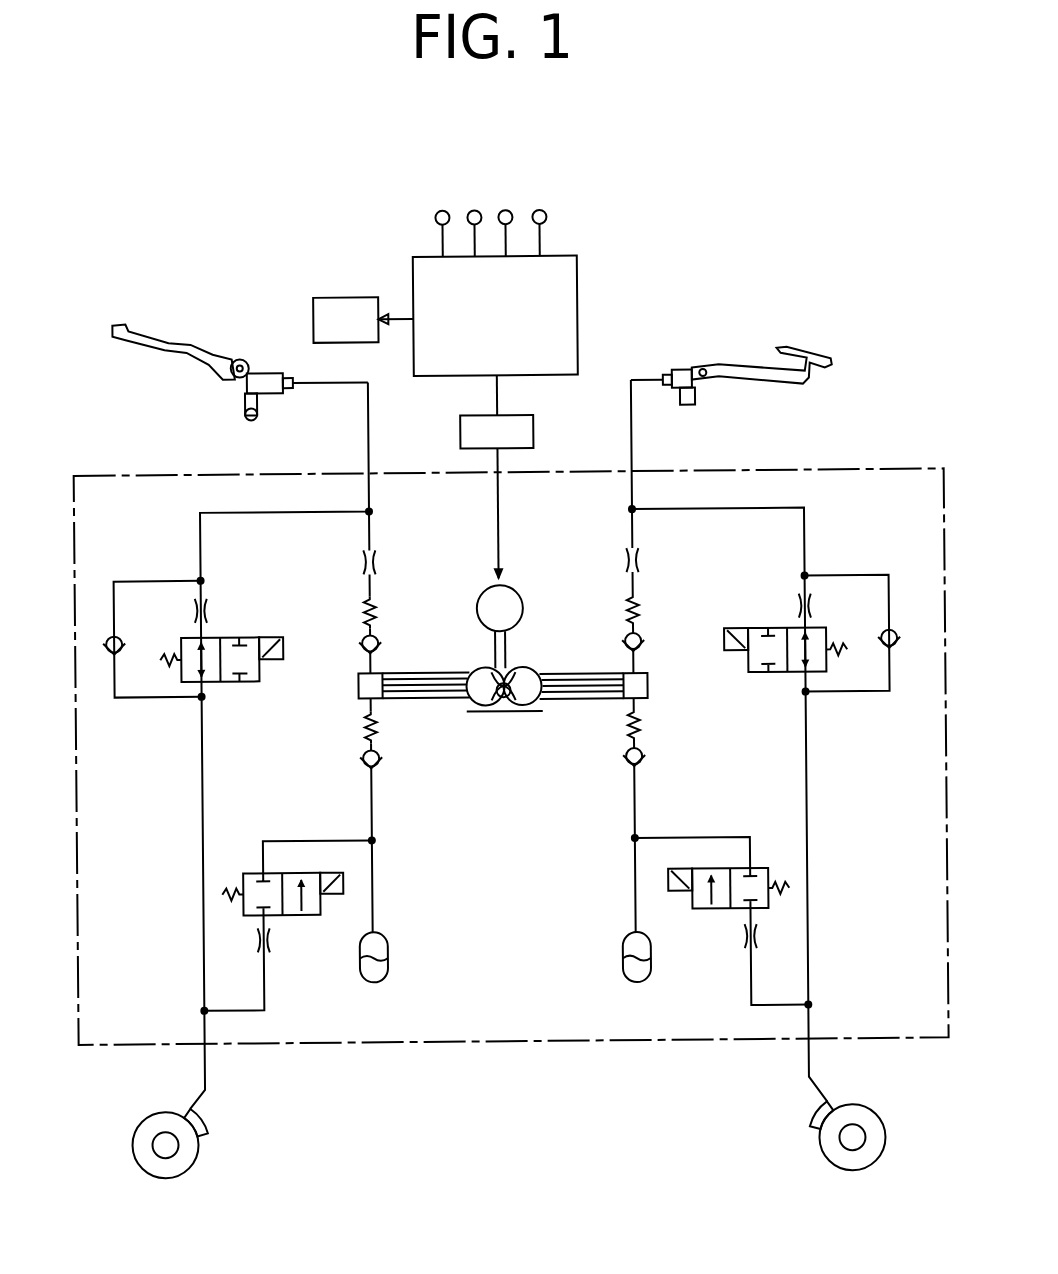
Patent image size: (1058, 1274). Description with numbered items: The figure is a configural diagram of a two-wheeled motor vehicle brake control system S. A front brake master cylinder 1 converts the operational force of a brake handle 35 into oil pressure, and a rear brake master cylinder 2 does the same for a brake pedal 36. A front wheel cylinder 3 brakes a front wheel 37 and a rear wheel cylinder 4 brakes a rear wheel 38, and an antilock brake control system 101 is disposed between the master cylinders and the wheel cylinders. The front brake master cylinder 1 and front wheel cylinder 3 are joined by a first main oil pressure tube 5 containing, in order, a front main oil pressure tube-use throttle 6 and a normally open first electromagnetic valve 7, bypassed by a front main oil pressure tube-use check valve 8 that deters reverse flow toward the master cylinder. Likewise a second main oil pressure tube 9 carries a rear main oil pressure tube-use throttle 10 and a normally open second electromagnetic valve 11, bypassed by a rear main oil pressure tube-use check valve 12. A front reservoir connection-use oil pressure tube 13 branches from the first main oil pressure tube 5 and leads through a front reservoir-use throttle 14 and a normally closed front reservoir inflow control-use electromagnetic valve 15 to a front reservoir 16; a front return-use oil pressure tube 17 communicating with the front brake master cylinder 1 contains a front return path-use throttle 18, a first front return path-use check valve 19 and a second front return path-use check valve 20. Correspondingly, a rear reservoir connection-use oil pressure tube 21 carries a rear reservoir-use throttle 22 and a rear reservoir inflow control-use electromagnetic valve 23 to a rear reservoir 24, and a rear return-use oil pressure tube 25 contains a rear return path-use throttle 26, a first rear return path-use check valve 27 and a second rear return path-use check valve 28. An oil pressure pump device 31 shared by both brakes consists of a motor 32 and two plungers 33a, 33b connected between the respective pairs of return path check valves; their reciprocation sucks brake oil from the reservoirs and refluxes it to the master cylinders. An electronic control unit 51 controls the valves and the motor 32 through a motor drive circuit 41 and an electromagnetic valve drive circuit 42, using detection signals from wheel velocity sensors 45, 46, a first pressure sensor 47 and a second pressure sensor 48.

The brake control system S is at (91, 406).
The antilock brake control system 101 is at (893, 468).
The front brake master cylinder 1 is at (268, 370).
The rear brake master cylinder 2 is at (673, 371).
The front wheel cylinder 3 is at (205, 1137).
The rear wheel cylinder 4 is at (818, 1121).
The first main oil pressure tube 5 is at (201, 807).
The front main oil pressure tube-use throttle 6 is at (208, 610).
The first electromagnetic valve 7 is at (214, 685).
The front main oil pressure tube-use check valve 8 is at (112, 633).
The second main oil pressure tube 9 is at (812, 806).
The rear main oil pressure tube-use throttle 10 is at (795, 609).
The second electromagnetic valve 11 is at (800, 678).
The rear main oil pressure tube-use check valve 12 is at (895, 630).
The front reservoir connection-use oil pressure tube 13 is at (277, 870).
The front reservoir-use throttle 14 is at (275, 942).
The front reservoir inflow control-use electromagnetic valve 15 is at (248, 870).
The front reservoir 16 is at (386, 956).
The front return-use oil pressure tube 17 is at (374, 806).
The front return path-use throttle 18 is at (358, 562).
The first front return path-use check valve 19 is at (360, 641).
The second front return path-use check valve 20 is at (360, 757).
The rear reservoir connection-use oil pressure tube 21 is at (705, 838).
The rear reservoir-use throttle 22 is at (746, 944).
The rear reservoir inflow control-use electromagnetic valve 23 is at (760, 868).
The rear reservoir 24 is at (621, 956).
The rear return-use oil pressure tube 25 is at (632, 806).
The rear return path-use throttle 26 is at (622, 563).
The first rear return path-use check valve 27 is at (645, 641).
The second rear return path-use check valve 28 is at (622, 757).
The oil pressure pump device 31 is at (459, 591).
The motor 32 is at (516, 589).
The plunger 33a is at (428, 672).
The plunger 33b is at (572, 672).
The brake handle 35 is at (165, 340).
The brake pedal 36 is at (820, 358).
The front wheel 37 is at (129, 1137).
The rear wheel 38 is at (882, 1133).
The motor drive circuit 41 is at (536, 430).
The electromagnetic valve drive circuit 42 is at (319, 306).
The wheel velocity sensor 45 is at (447, 209).
The wheel velocity sensor 46 is at (479, 209).
The first pressure sensor 47 is at (510, 209).
The second pressure sensor 48 is at (544, 209).
The electronic control unit 51 is at (581, 268).